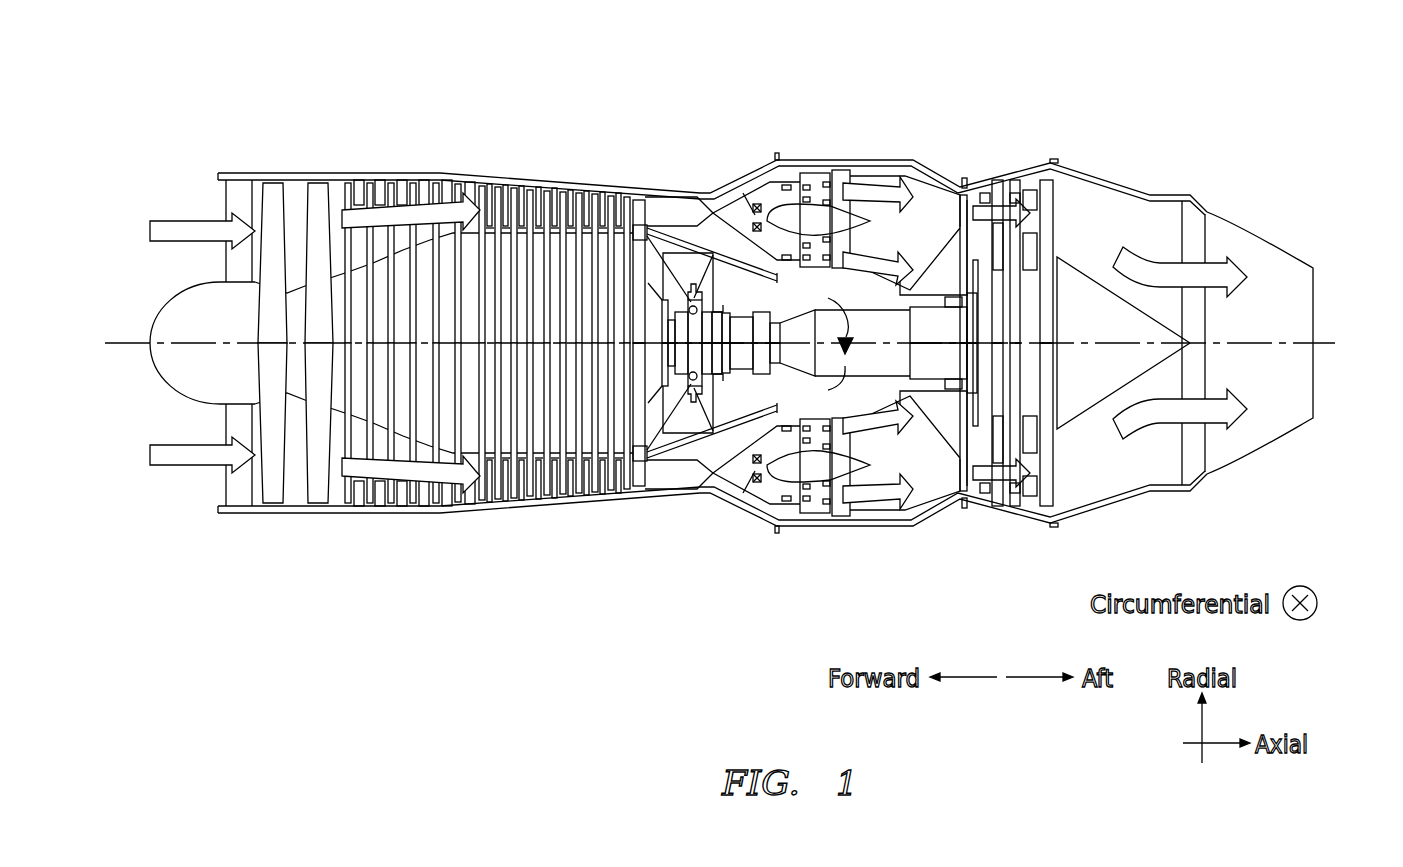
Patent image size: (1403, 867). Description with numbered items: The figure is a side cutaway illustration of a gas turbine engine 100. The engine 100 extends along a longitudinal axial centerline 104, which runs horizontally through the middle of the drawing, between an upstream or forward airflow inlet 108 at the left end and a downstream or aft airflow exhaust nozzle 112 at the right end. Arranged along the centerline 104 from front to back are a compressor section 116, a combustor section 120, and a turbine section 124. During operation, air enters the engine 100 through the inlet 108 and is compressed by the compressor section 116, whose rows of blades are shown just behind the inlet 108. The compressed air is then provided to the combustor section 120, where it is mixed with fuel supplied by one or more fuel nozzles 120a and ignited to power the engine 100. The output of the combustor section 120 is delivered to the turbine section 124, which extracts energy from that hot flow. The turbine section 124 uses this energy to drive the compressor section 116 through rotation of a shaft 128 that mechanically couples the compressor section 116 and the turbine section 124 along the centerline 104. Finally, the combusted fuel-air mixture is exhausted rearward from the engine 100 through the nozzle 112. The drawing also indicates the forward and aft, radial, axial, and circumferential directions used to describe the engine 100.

The engine 100 is at (1258, 172).
The longitudinal axial centerline 104 is at (1352, 362).
The airflow inlet 108 is at (230, 480).
The airflow exhaust nozzle 112 is at (1160, 490).
The compressor section 116 is at (498, 493).
The combustor section 120 is at (725, 473).
The fuel nozzle 120a is at (768, 488).
The turbine section 124 is at (993, 383).
The shaft 128 is at (868, 380).